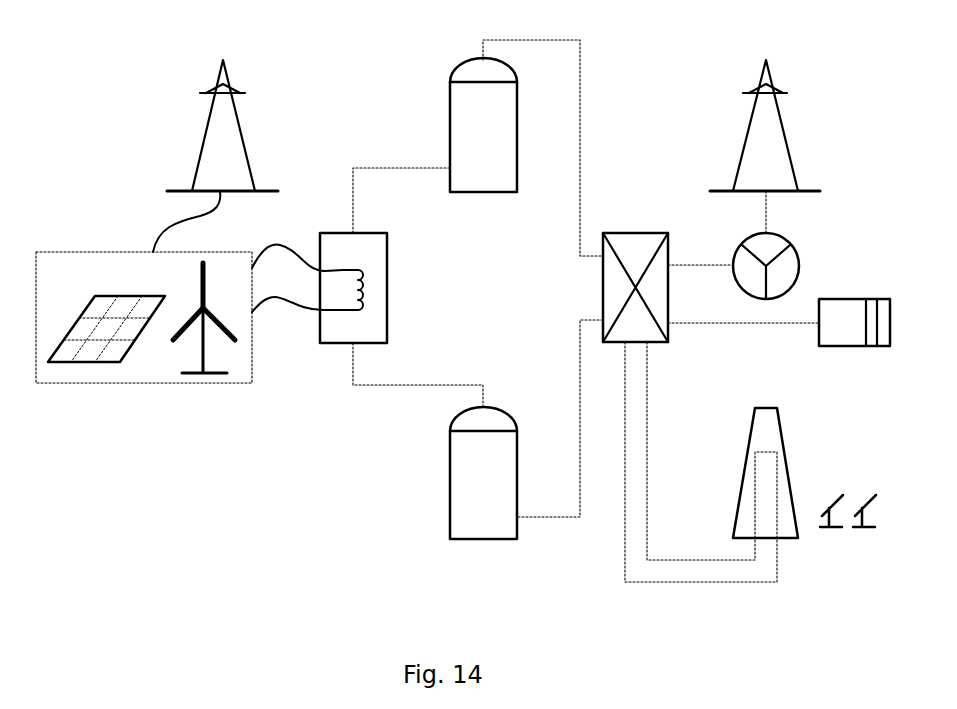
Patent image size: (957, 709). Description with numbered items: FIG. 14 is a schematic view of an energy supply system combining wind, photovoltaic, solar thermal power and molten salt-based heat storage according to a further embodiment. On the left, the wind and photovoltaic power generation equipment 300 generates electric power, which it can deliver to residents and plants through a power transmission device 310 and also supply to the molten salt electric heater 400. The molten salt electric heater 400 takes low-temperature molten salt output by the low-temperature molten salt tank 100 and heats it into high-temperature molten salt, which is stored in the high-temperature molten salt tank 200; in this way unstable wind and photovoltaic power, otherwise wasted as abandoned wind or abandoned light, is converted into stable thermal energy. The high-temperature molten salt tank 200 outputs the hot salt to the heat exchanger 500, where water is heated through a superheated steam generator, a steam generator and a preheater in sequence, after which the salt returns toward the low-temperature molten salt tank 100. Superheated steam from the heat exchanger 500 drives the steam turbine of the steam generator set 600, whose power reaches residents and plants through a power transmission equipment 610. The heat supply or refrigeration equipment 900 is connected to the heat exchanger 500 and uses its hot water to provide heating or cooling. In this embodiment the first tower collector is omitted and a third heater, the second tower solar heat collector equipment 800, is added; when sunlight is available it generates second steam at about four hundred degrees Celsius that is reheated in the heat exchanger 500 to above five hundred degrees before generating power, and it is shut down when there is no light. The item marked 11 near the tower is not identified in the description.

The low-temperature molten salt tank 100 is at (473, 503).
The high-temperature molten salt tank 200 is at (470, 115).
The wind and photovoltaic power generation equipment 300 is at (143, 383).
The power transmission device 310 is at (233, 147).
The molten salt electric heater 400 is at (372, 282).
The heat exchanger 500 is at (600, 302).
The steam generator set 600 is at (777, 278).
The power transmission equipment 610 is at (767, 145).
The second tower solar heat collector equipment 800 is at (767, 405).
The heat supply or refrigeration equipment 900 is at (848, 332).
The ambient air 11 is at (848, 511).